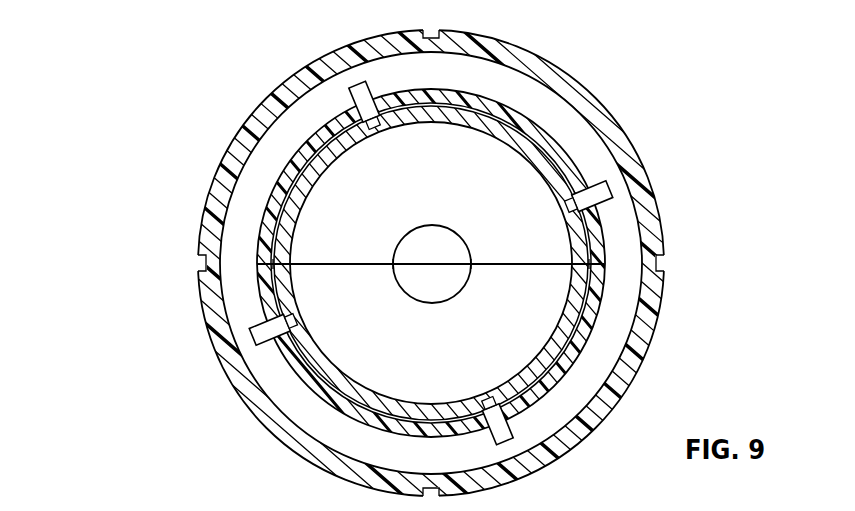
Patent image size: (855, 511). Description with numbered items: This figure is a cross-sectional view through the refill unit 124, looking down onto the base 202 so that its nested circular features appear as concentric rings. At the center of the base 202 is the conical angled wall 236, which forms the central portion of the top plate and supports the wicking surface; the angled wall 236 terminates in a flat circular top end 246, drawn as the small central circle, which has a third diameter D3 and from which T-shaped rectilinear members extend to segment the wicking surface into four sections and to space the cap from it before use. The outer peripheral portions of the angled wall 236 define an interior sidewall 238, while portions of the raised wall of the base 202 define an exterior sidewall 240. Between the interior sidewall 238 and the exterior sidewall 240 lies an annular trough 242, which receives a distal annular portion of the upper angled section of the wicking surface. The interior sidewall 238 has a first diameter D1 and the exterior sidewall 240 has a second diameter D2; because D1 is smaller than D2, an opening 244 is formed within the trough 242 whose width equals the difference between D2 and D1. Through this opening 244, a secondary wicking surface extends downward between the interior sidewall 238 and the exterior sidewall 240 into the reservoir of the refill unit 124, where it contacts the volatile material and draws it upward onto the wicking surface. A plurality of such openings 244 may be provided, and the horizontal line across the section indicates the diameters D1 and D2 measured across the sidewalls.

The refill unit 124 is at (127, 51).
The base 202 is at (657, 302).
The angled wall 236 is at (373, 356).
The interior sidewall 238 is at (280, 187).
The exterior sidewall 240 is at (548, 140).
The trough 242 is at (566, 172).
The opening 244 is at (265, 203).
The flat circular top end 246 is at (363, 96).
The first diameter D1 is at (273, 262).
The second diameter D2 is at (601, 263).
The third diameter D3 is at (434, 250).